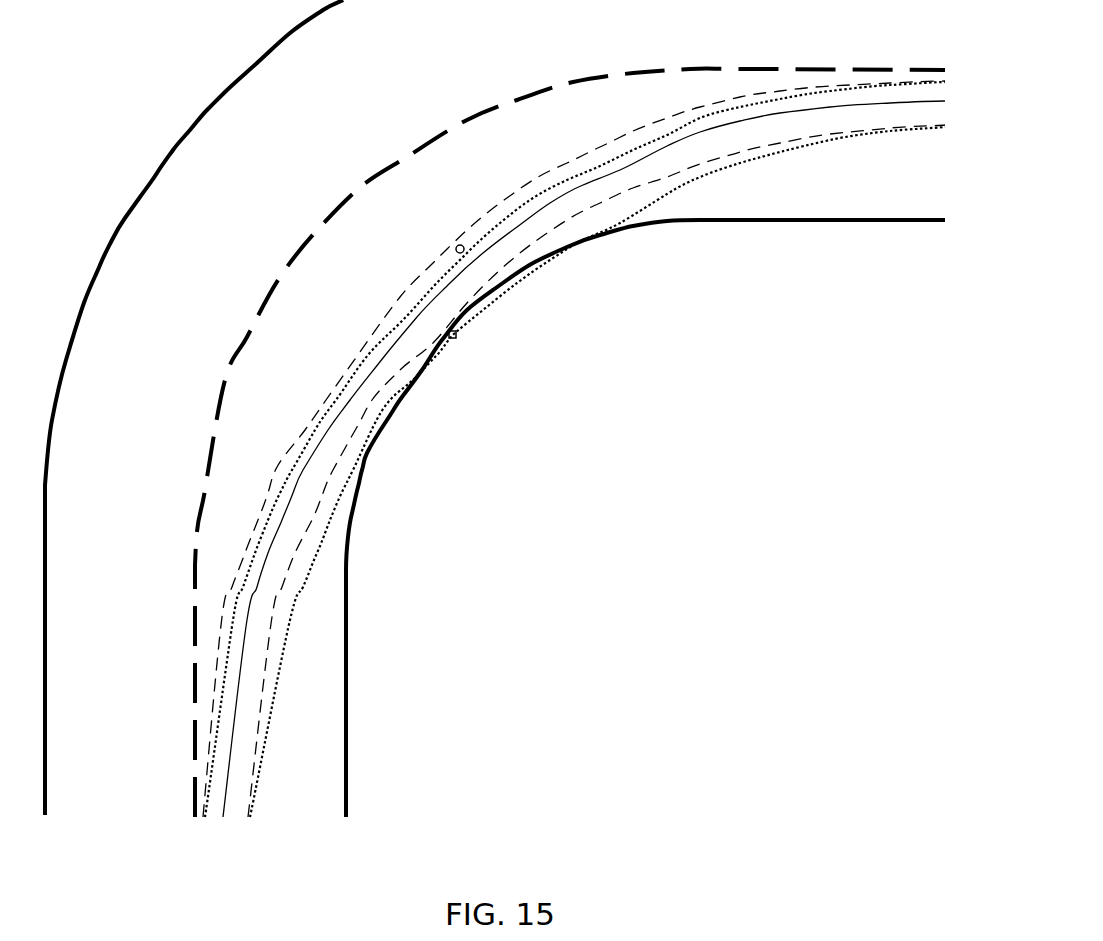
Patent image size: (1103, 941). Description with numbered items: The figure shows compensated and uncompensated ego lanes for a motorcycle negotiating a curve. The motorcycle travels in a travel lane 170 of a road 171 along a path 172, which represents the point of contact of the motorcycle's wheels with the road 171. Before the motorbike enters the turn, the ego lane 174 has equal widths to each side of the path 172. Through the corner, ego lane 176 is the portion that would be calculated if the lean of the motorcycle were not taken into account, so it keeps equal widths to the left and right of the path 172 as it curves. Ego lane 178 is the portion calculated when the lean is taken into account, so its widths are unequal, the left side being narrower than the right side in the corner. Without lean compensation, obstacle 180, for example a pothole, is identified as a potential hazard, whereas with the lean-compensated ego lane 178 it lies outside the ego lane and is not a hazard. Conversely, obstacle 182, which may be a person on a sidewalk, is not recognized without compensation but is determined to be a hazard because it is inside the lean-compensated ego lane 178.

The travel lane 170 is at (320, 782).
The road 171 is at (111, 239).
The path 172 is at (245, 640).
The ego lane 174 is at (248, 813).
The ego lane 176 is at (385, 308).
The ego lane 178 is at (424, 378).
The obstacle 180 is at (457, 246).
The obstacle 182 is at (457, 335).